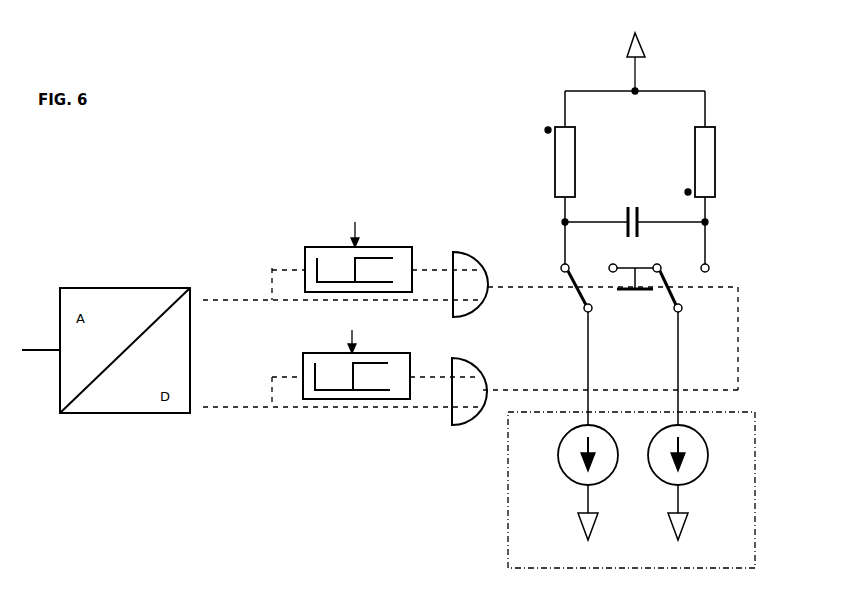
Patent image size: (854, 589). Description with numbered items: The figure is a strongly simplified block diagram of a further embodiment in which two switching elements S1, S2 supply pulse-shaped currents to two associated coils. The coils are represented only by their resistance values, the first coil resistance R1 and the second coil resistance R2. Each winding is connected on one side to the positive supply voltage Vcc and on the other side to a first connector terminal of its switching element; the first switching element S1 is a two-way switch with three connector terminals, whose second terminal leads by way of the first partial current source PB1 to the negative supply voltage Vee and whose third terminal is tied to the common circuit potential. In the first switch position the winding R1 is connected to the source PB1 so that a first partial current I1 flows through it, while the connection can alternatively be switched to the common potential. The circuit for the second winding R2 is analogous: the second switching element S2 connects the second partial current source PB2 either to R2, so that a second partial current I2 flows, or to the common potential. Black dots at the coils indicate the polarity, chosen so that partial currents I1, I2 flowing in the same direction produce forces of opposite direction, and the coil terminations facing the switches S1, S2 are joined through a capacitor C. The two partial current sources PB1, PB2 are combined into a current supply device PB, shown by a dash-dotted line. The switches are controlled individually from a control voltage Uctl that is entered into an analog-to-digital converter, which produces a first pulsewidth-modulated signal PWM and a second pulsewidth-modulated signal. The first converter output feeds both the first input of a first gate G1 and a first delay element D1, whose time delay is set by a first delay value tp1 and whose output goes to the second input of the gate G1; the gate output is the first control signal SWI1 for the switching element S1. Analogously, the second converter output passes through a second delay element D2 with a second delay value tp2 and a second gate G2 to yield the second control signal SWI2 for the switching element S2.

The control voltage Uctl is at (40, 341).
The first pulsewidth-modulated signal PWM is at (341, 284).
The first delay element D1 is at (392, 257).
The second delay element D2 is at (391, 365).
The first delay value tp1 is at (353, 222).
The second delay value tp2 is at (350, 332).
The first gate G1 is at (470, 270).
The second gate G2 is at (469, 381).
The first control signal SWI1 is at (613, 328).
The second control signal SWI2 is at (610, 380).
The first switching element S1 is at (576, 336).
The second switching element S2 is at (648, 336).
The first partial current I1 is at (554, 241).
The second partial current I2 is at (712, 245).
The first coil resistance R1 is at (549, 156).
The second coil resistance R2 is at (692, 156).
The capacitor C is at (635, 210).
The positive supply voltage Vcc is at (648, 60).
The negative supply voltage Vee is at (646, 523).
The current supply device PB is at (631, 500).
The first partial current source PB1 is at (562, 469).
The second partial current source PB2 is at (686, 469).